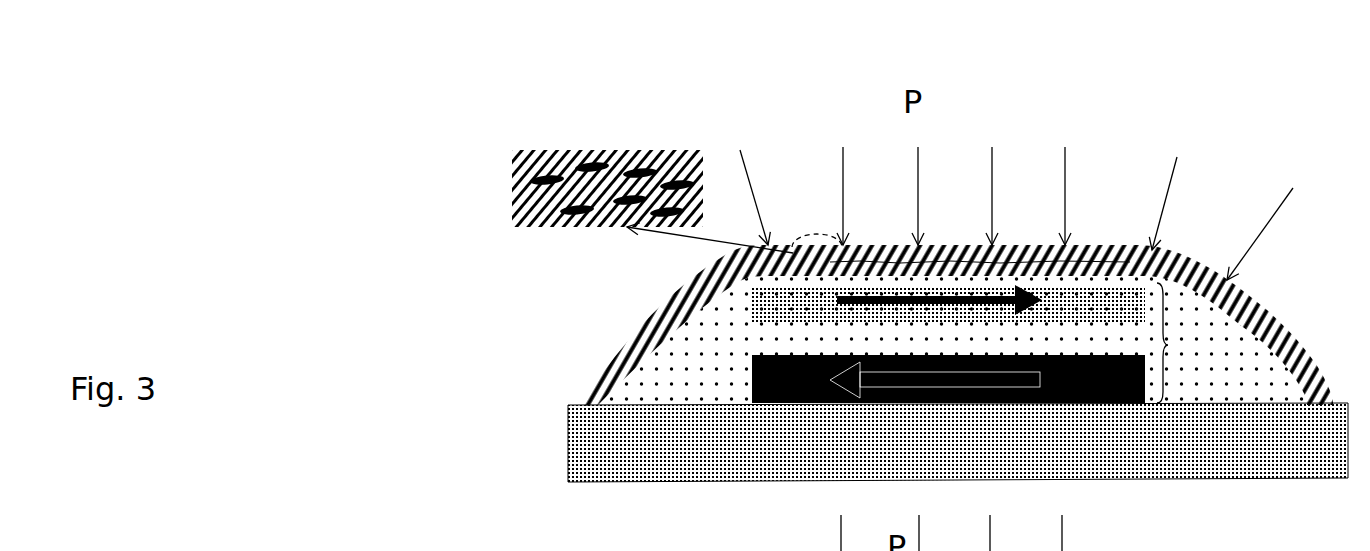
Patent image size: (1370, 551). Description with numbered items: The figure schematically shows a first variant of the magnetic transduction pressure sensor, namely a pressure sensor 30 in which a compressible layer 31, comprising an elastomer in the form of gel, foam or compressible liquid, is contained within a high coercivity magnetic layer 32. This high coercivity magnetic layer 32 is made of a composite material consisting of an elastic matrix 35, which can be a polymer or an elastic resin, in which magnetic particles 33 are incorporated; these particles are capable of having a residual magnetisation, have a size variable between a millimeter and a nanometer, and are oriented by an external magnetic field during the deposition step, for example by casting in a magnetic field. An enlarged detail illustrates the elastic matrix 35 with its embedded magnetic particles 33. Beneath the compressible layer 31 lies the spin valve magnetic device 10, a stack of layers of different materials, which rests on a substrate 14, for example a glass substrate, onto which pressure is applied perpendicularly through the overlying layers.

The pressure sensor 30 is at (380, 170).
The elastic matrix 35 is at (520, 157).
The magnetic particles 33 is at (580, 153).
The high coercivity magnetic layer 32 is at (642, 328).
The compressible layer 31 is at (703, 390).
The spin valve magnetic device 10 is at (1168, 345).
The substrate 14 is at (570, 482).